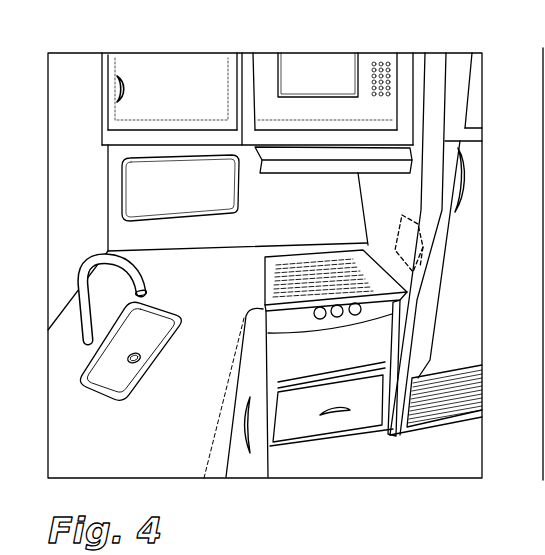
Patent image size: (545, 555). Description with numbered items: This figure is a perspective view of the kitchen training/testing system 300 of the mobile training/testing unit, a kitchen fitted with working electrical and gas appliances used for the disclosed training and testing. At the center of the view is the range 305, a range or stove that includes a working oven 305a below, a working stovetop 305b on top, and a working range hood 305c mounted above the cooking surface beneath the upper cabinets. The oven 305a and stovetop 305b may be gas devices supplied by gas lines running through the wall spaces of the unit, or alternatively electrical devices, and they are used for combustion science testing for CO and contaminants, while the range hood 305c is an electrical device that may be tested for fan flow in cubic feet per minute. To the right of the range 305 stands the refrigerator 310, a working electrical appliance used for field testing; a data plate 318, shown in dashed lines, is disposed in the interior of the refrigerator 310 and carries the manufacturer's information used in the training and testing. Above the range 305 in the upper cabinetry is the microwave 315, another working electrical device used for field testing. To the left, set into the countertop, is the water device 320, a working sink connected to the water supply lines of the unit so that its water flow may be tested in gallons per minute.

The kitchen training/testing system 300 is at (88, 248).
The range 305 is at (253, 268).
The oven 305a is at (306, 368).
The stovetop 305b is at (296, 236).
The range hood 305c is at (302, 188).
The refrigerator 310 is at (462, 329).
The microwave 315 is at (320, 66).
The data plate 318 is at (418, 246).
The water device 320 is at (142, 395).